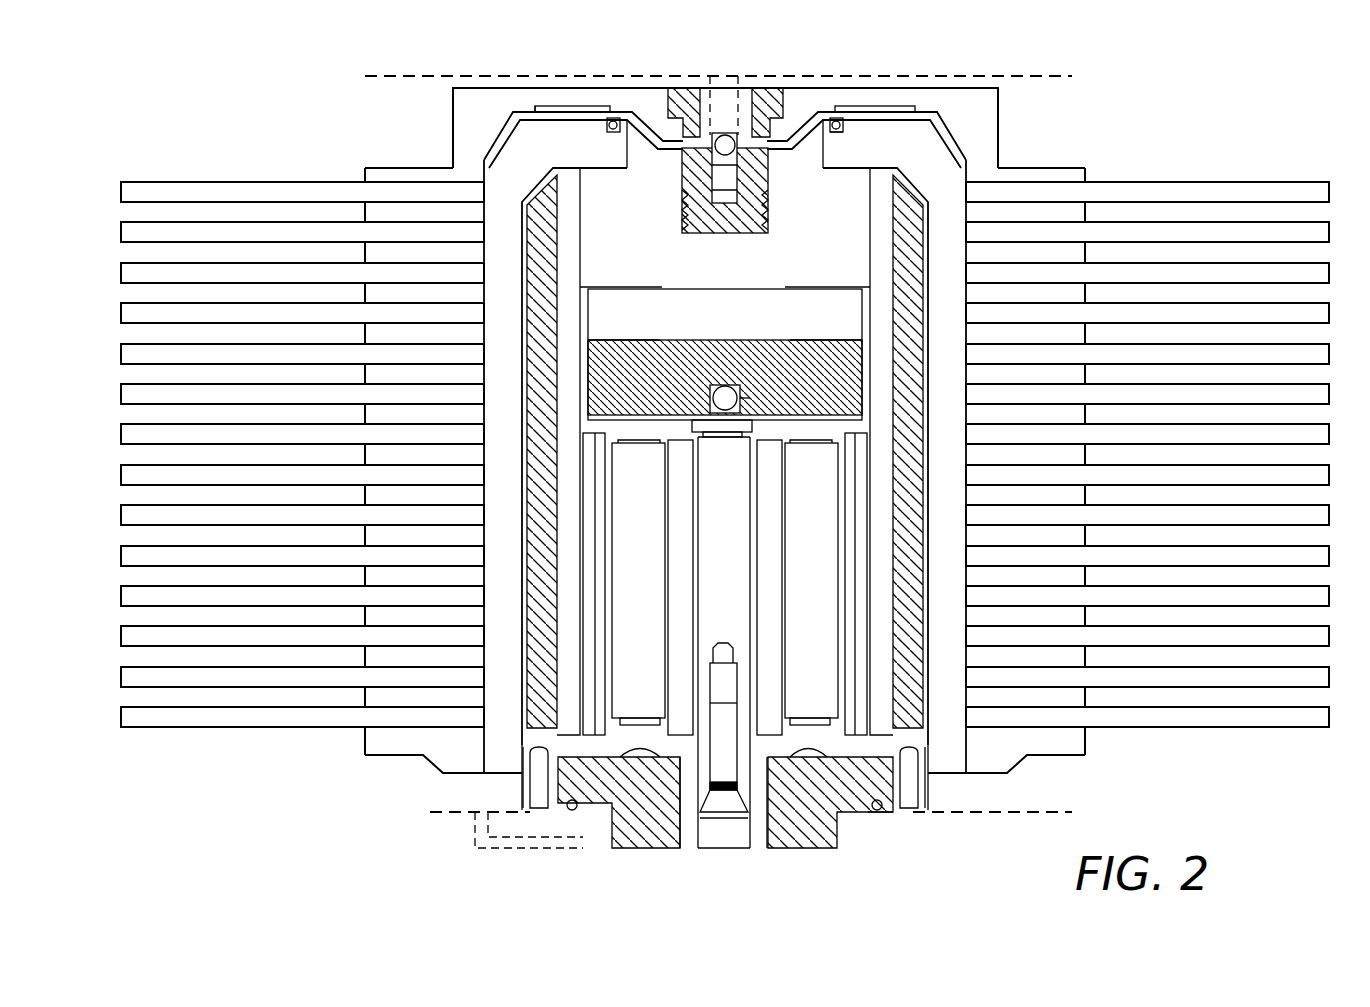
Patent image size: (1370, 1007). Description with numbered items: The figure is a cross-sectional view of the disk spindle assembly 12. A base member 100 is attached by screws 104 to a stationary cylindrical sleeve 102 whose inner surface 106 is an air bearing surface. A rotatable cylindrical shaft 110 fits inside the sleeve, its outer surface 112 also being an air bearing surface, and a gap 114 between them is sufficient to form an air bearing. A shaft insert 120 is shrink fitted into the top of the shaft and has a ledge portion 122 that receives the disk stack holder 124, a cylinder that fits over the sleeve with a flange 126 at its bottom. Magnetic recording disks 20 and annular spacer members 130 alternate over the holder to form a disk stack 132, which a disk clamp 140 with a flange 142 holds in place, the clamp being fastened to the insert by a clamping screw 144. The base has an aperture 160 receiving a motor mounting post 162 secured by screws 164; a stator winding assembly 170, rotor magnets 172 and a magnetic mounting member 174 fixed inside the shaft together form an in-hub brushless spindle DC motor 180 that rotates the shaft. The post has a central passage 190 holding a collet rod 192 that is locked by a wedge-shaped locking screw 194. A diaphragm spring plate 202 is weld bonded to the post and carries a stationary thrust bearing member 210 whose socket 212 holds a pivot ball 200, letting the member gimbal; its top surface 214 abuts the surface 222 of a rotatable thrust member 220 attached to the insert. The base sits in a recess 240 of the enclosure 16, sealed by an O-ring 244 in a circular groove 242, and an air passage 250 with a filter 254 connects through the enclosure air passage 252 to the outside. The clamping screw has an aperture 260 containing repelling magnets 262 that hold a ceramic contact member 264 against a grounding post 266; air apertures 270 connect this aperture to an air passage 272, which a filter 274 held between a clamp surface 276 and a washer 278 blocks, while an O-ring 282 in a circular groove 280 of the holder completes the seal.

The spindle assembly 12 is at (232, 115).
The enclosure 16 is at (497, 76).
The magnetic recording disks 20 is at (121, 184).
The base member 100 is at (635, 842).
The stationary cylindrical sleeve 102 is at (522, 718).
The screws 104 is at (532, 792).
The inner surface 106 is at (560, 668).
The rotatable cylindrical shaft 110 is at (583, 192).
The outer surface 112 is at (570, 228).
The gap 114 is at (582, 250).
The shaft insert 120 is at (832, 257).
The ledge portion 122 is at (628, 172).
The disk stack hub or holder 124 is at (562, 158).
The flange 126 is at (398, 758).
The annular spacer members 130 is at (382, 290).
The disk stack 132 is at (182, 746).
The disk clamp 140 is at (453, 100).
The flange 142 is at (400, 168).
The clamping screw 144 is at (695, 86).
The aperture 160 is at (683, 835).
The motor mounting post 162 is at (757, 840).
The screws 164 is at (808, 742).
The stator winding assembly 170 is at (826, 603).
The rotor magnets 172 is at (845, 556).
The magnetic mounting member 174 is at (865, 490).
The in-hub brushless spindle DC motor 180 is at (662, 605).
The central passage 190 is at (693, 500).
The collet rod 192 is at (715, 530).
The wedge-shaped locking screw 194 is at (720, 716).
The pivot ball 200 is at (712, 400).
The diaphragm spring plate 202 is at (627, 412).
The stationary cylindrical thrust bearing member 210 is at (826, 380).
The socket 212 is at (750, 398).
The top surface 214 is at (648, 340).
The cylindrical rotatable thrust member 220 is at (745, 326).
The surface 222 is at (825, 340).
The recess 240 is at (845, 835).
The circular groove 242 is at (890, 812).
The O-ring 244 is at (880, 820).
The air passage 250 is at (588, 822).
The air passage 252 is at (474, 828).
The filter 254 is at (548, 826).
The aperture 260 is at (770, 92).
The repelling disk-shaped magnets 262 is at (750, 200).
The electrically conductive ceramic contact member 264 is at (737, 147).
The post 266 is at (718, 88).
The air apertures 270 is at (668, 88).
The air passage 272 is at (545, 110).
The filter 274 is at (540, 104).
The surface 276 is at (537, 108).
The washer 278 is at (613, 116).
The circular groove 280 is at (845, 132).
The O-ring 282 is at (840, 126).